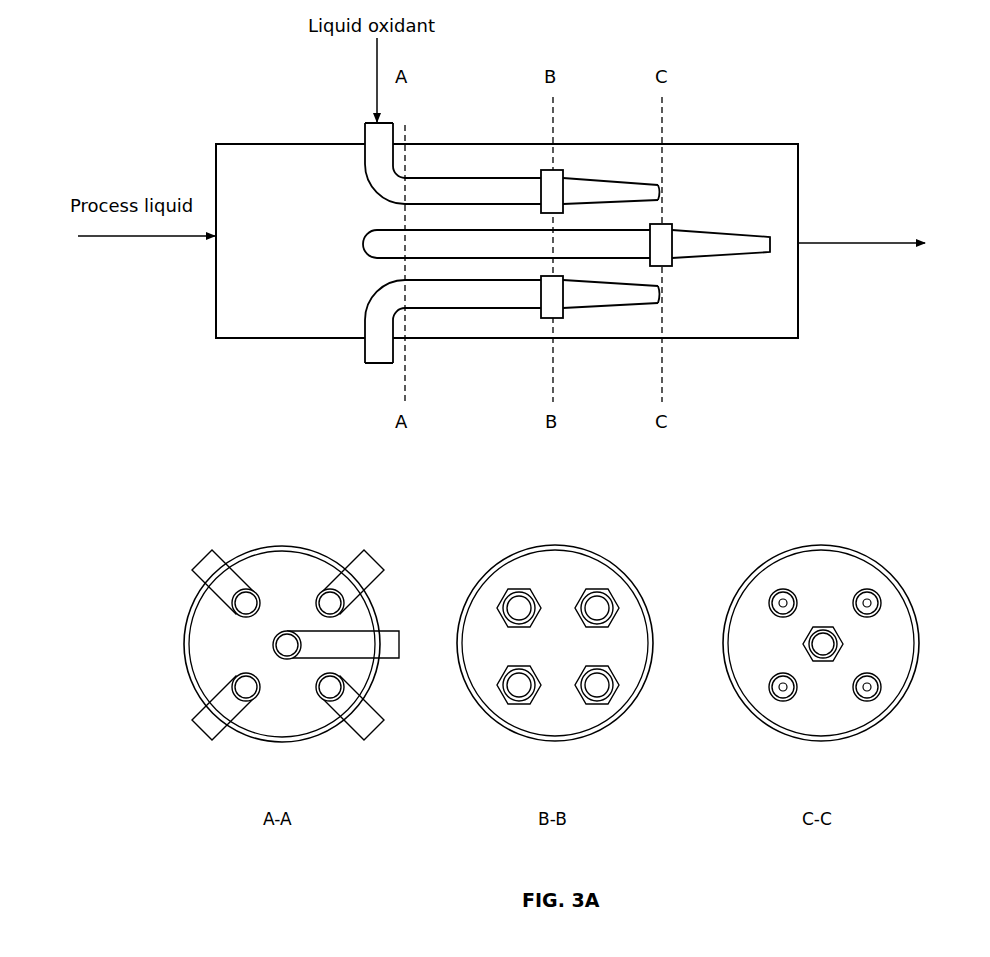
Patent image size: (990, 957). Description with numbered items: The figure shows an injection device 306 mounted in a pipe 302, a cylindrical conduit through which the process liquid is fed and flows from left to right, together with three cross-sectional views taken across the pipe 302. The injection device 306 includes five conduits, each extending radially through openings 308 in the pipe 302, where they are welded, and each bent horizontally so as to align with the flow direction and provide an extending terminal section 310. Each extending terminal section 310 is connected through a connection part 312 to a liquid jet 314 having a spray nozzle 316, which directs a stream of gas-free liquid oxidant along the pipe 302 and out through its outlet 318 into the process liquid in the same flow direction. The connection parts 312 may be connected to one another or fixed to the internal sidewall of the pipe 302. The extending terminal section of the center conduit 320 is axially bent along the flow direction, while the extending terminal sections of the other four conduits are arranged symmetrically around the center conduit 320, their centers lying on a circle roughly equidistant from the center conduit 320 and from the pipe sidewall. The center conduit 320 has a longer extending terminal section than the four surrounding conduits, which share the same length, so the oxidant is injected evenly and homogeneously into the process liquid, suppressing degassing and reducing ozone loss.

The pipe 302 is at (763, 142).
The injection device 306 is at (364, 138).
The openings 308 is at (366, 339).
The extending terminal section 310 is at (470, 175).
The connection part 312 is at (545, 205).
The liquid jet 314 is at (580, 176).
The spray nozzle 316 is at (660, 189).
The outlet 318 is at (800, 242).
The center conduit 320 is at (718, 230).